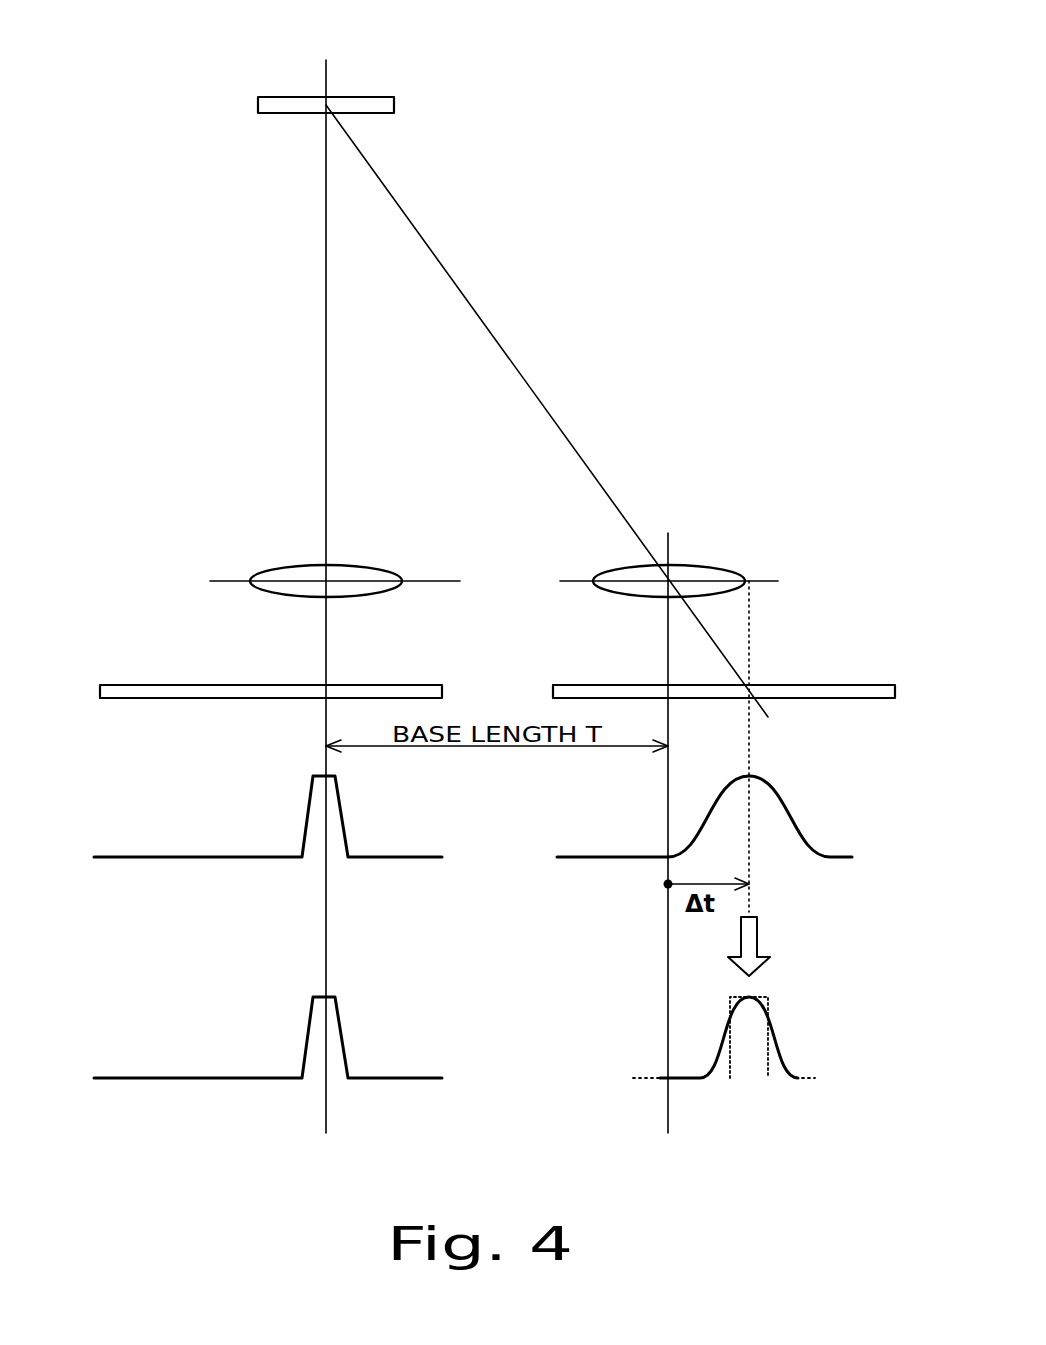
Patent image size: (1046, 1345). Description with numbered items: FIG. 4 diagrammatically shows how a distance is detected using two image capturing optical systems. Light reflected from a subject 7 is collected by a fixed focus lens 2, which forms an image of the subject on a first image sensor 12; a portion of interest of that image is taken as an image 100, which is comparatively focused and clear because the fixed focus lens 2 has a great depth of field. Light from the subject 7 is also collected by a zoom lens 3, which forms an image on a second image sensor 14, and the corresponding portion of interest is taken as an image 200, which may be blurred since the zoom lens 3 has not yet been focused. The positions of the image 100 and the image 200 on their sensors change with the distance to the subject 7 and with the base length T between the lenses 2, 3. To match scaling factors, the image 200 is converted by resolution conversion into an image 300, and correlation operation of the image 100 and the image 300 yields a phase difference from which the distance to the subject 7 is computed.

The subject 7 is at (375, 97).
The fixed focus lens 2 is at (371, 565).
The zoom lens 3 is at (713, 565).
The first image sensor 12 is at (390, 685).
The second image sensor 14 is at (822, 685).
The image 100 is at (345, 825).
The image 200 is at (792, 825).
The image 300 is at (767, 1025).